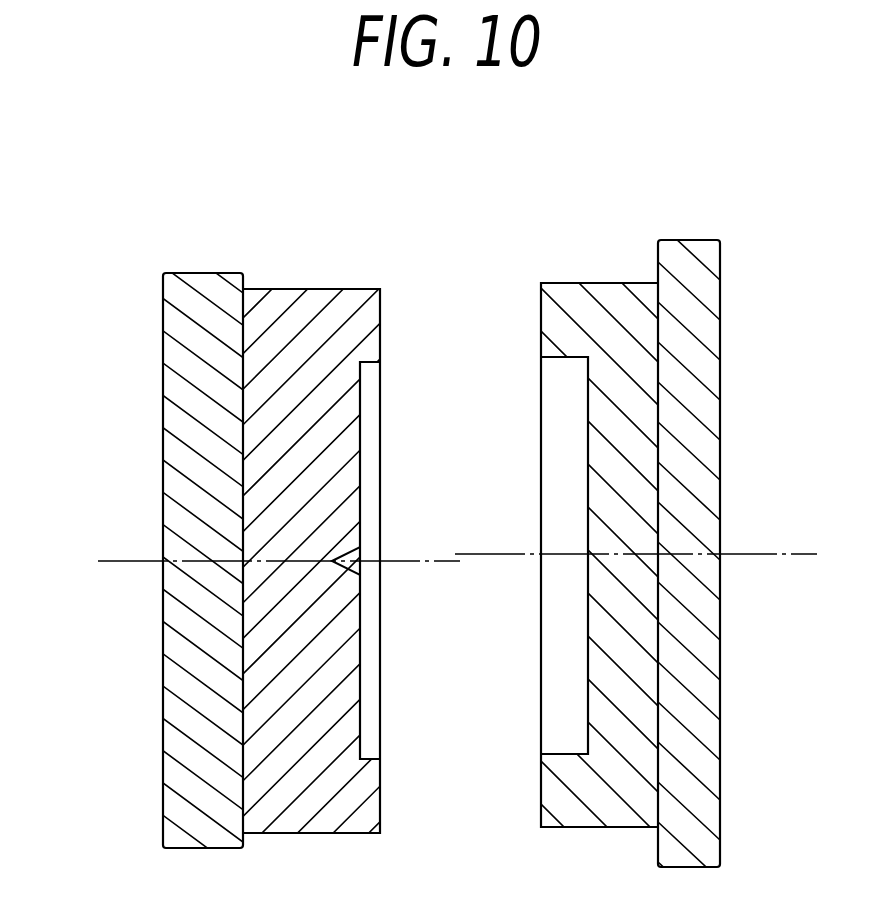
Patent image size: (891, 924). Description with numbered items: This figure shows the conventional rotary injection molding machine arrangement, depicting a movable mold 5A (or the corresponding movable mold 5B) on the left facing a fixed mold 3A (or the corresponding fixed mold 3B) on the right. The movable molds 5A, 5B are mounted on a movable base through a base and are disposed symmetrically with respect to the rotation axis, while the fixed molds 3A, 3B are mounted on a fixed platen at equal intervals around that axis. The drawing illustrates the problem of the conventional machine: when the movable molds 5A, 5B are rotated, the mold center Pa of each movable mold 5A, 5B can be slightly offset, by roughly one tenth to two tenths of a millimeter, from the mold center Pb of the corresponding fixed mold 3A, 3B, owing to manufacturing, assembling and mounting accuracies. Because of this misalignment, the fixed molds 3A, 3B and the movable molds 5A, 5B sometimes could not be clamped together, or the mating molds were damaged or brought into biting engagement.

The movable mold 5A is at (256, 534).
The movable mold 5B is at (310, 289).
The fixed mold 3A is at (659, 520).
The fixed mold 3B is at (593, 283).